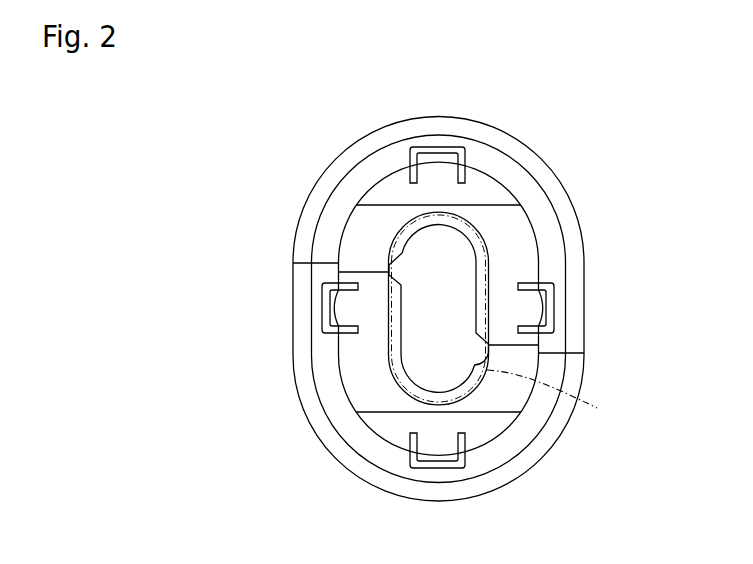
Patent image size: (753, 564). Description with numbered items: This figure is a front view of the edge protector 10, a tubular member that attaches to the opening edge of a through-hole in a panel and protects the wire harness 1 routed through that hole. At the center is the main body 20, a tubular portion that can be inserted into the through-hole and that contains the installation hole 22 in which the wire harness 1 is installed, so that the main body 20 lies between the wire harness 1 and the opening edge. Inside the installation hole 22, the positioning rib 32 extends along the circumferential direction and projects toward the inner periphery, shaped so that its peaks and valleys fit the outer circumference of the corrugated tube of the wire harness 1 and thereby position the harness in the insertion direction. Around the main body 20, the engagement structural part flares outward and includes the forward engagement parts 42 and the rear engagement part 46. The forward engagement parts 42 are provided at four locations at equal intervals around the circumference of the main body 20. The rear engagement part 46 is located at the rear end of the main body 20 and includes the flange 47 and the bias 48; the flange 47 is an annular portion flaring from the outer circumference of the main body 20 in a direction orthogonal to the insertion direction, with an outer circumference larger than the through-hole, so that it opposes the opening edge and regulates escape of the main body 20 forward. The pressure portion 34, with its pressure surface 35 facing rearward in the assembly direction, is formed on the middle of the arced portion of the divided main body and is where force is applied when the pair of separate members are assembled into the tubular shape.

The wire harness 1 is at (548, 396).
The edge protector 10 is at (395, 310).
The main body 20 is at (536, 229).
The installation hole 22 is at (390, 345).
The positioning rib 32 is at (397, 298).
The pressure portion 34 is at (397, 309).
The pressure surface 35 is at (387, 204).
The forward engagement part 42 is at (440, 158).
The rear engagement part 46 is at (536, 147).
The flange 47 is at (533, 188).
The bias 48 is at (505, 137).